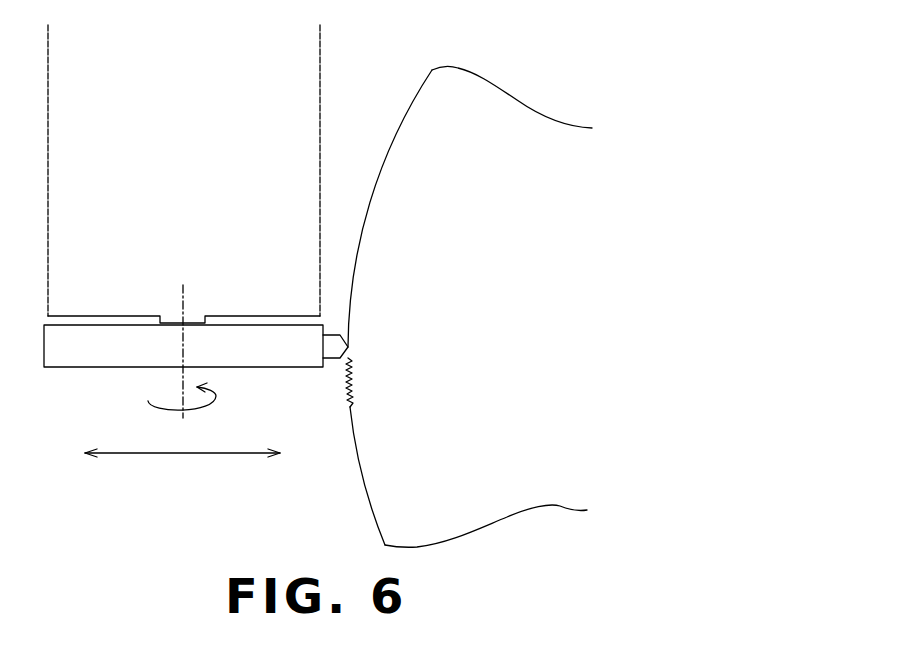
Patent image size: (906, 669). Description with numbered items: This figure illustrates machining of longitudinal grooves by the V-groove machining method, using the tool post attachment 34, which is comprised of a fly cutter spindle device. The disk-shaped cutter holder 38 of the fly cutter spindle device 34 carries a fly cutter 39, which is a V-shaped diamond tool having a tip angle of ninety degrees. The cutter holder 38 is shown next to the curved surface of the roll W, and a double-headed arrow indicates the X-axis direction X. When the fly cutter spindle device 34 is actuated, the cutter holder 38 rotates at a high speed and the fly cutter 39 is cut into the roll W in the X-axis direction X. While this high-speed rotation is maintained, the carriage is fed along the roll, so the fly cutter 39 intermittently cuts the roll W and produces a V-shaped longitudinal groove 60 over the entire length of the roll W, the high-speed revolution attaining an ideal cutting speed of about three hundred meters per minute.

The tool post attachment 34 is at (293, 128).
The cutter holder 38 is at (77, 348).
The fly cutter 39 is at (328, 336).
The longitudinal groove 60 is at (345, 385).
The roll W is at (368, 500).
The X-axis direction X is at (182, 463).